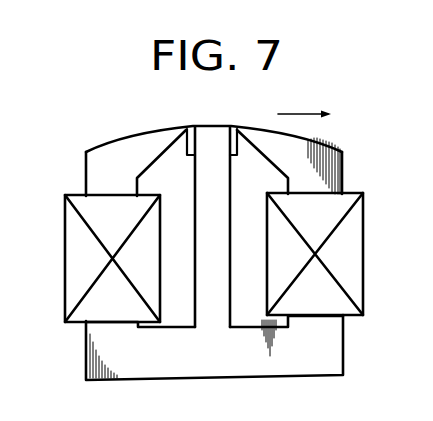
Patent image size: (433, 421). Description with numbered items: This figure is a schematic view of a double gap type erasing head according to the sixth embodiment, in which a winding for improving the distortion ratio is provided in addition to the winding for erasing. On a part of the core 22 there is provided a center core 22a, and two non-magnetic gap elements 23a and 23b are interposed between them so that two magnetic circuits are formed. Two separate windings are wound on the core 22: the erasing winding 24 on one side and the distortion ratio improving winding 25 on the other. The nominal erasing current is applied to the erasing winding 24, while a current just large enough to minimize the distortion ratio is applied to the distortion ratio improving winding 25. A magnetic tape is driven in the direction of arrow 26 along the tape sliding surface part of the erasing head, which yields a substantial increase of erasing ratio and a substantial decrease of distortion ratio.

The core 22 is at (95, 159).
The center core 22a is at (213, 134).
The non-magnetic gap element 23a is at (186, 128).
The non-magnetic gap element 23b is at (239, 128).
The erasing winding 24 is at (74, 268).
The distortion ratio improving winding 25 is at (351, 263).
The arrow 26 is at (298, 114).